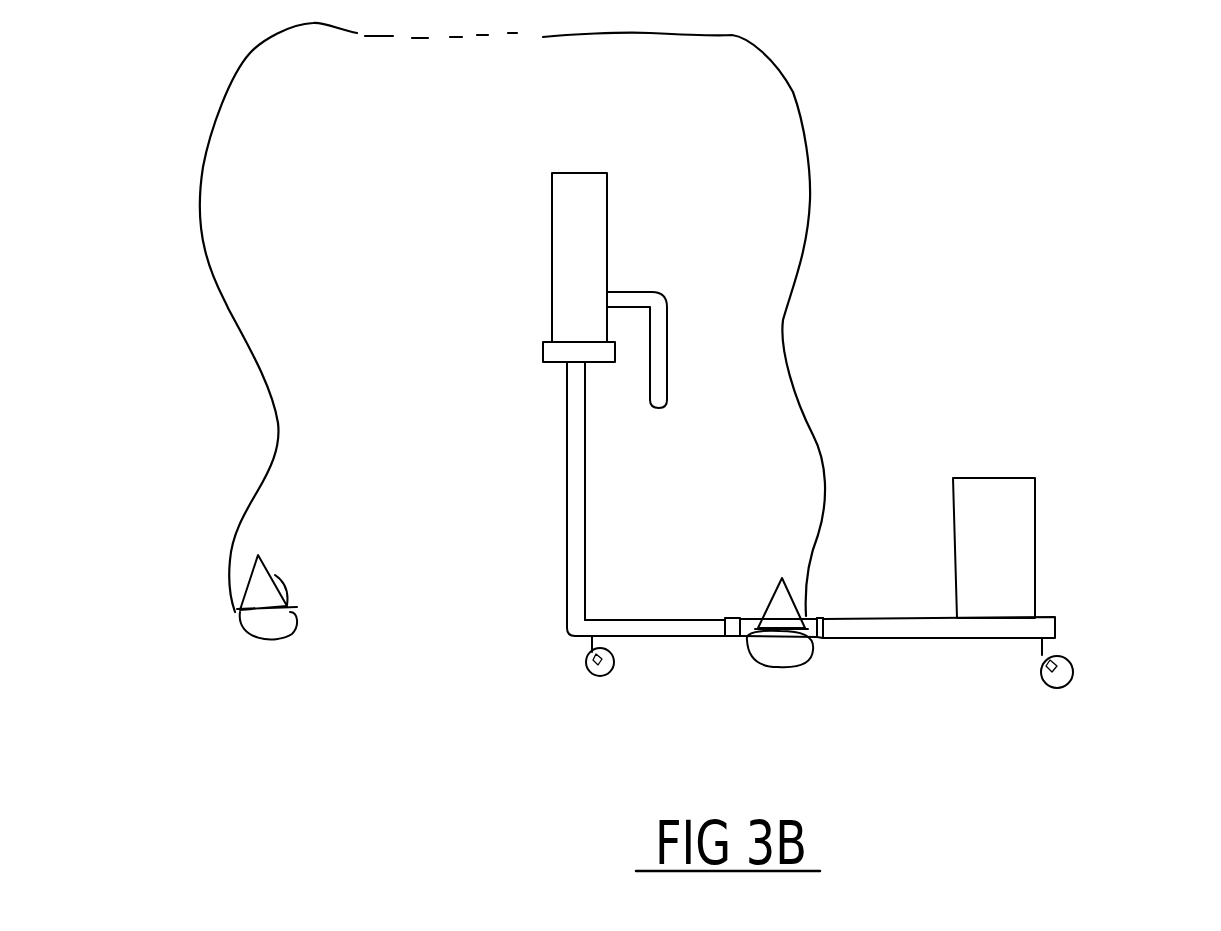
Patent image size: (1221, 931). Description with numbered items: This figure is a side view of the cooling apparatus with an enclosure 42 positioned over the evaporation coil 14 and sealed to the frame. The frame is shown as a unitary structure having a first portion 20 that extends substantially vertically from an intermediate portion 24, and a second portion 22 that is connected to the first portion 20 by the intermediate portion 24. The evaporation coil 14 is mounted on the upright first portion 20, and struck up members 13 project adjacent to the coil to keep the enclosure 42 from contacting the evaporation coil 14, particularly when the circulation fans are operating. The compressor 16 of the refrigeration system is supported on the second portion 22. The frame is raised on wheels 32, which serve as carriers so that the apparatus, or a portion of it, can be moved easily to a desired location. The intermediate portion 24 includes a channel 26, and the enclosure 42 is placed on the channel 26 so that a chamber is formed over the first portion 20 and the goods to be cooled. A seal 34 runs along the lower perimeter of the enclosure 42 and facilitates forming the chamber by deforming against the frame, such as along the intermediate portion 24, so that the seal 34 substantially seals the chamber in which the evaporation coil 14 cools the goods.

The enclosure 42 is at (797, 90).
The evaporation coil 14 is at (552, 210).
The struck up members 13 is at (662, 296).
The first portion 20 is at (567, 600).
The intermediate portion 24 is at (836, 617).
The second portion 22 is at (1054, 617).
The channel 26 is at (817, 638).
The compressor 16 is at (1036, 480).
The wheels 32 is at (1075, 660).
The seal 34 is at (748, 657).